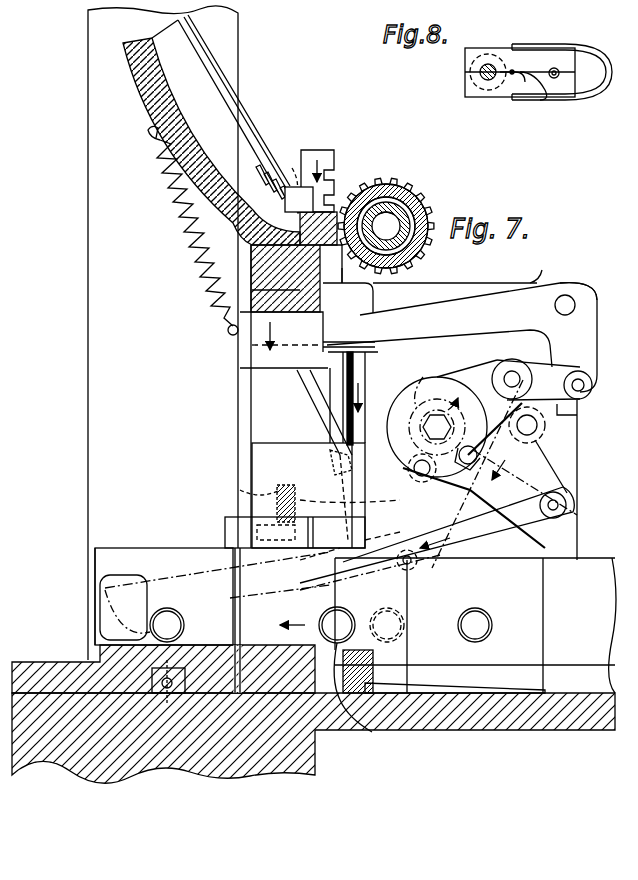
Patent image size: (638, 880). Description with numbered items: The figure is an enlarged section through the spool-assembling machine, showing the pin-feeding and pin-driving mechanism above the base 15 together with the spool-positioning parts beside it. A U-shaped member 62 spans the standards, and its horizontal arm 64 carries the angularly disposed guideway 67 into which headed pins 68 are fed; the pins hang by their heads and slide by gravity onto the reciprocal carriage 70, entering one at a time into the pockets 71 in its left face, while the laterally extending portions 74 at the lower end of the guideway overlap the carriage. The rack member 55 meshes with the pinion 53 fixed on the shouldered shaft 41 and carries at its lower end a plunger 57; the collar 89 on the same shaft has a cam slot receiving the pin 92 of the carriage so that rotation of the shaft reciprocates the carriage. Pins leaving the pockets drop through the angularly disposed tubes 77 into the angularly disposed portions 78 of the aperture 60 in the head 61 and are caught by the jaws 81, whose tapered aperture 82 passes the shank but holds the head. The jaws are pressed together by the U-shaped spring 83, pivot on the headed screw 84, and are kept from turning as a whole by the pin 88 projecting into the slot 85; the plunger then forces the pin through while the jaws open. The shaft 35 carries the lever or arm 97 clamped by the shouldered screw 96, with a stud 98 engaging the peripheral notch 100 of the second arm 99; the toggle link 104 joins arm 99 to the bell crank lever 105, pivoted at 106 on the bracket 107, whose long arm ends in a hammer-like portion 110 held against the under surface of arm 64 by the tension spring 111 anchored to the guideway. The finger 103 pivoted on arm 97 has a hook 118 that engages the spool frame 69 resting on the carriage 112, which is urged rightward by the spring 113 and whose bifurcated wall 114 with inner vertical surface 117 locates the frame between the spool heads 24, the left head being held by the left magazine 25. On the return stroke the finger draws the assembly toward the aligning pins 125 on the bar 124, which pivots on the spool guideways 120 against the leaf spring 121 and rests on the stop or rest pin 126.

In FIG. 7, the left magazine 25 is at (88, 132).
In FIG. 7, the tension spring 111 is at (160, 168).
In FIG. 7, the magazine or guideway 67 is at (242, 130).
In FIG. 7, the headed pins 68 is at (272, 178).
In FIG. 7, the rack member 55 is at (322, 150).
In FIG. 7, the laterally extending portions 74 is at (322, 215).
In FIG. 7, the reciprocal carriage 70 is at (372, 200).
In FIG. 7, the shouldered shaft 41 is at (410, 205).
In FIG. 7, the pinion 53 is at (430, 215).
In FIG. 7, the pockets 71 is at (252, 244).
In FIG. 7, the U-shaped member 62 is at (248, 262).
In FIG. 7, the horizontal arm 64 is at (252, 290).
In FIG. 7, the collar 89 is at (400, 272).
In FIG. 7, the pin 92 is at (428, 279).
In FIG. 7, the hammer-like portion 110 is at (248, 358).
In FIG. 7, the plunger 57 is at (355, 360).
In FIG. 7, the shaft 35 is at (428, 380).
In FIG. 7, the second arm 99 is at (476, 372).
In FIG. 7, the bracket 107 is at (525, 283).
In FIG. 7, the pivot 106 is at (562, 297).
In FIG. 7, the bell crank lever 105 is at (568, 283).
In FIG. 7, the toggle link 104 is at (578, 408).
In FIG. 7, the angularly disposed tubes 77 is at (305, 415).
In FIG. 7, the shouldered screw 96 is at (432, 426).
In FIG. 7, the lever or arm 97 is at (545, 468).
In FIG. 7, the angularly disposed portions 78 is at (332, 460).
In FIG. 7, the headed screw 84 is at (245, 490).
In FIG. 8, the headed screw 84 is at (488, 82).
In FIG. 7, the aperture 82 is at (275, 500).
In FIG. 8, the aperture 82 is at (560, 70).
In FIG. 7, the aperture 60 is at (344, 503).
In FIG. 7, the heads 61 is at (365, 485).
In FIG. 7, the peripheral notch 100 is at (440, 488).
In FIG. 7, the stud 98 is at (478, 470).
In FIG. 7, the jaws 81 is at (365, 538).
In FIG. 8, the jaws 81 is at (535, 55).
In FIG. 7, the U-shaped spring 83 is at (225, 535).
In FIG. 8, the U-shaped spring 83 is at (592, 98).
In FIG. 7, the spool heads 24 is at (150, 548).
In FIG. 7, the bifurcated wall 114 is at (100, 590).
In FIG. 7, the inner vertical surface 117 is at (148, 590).
In FIG. 7, the spool frame 69 is at (180, 612).
In FIG. 7, the carriage 112 is at (125, 607).
In FIG. 7, the spring 113 is at (185, 668).
In FIG. 7, the aligning pins 125 is at (345, 607).
In FIG. 7, the finger 103 is at (440, 572).
In FIG. 7, the bar 124 is at (400, 660).
In FIG. 7, the hook 118 is at (362, 700).
In FIG. 7, the leaf spring 121 is at (400, 700).
In FIG. 7, the stop or rest pin 126 is at (372, 732).
In FIG. 7, the base 15 is at (480, 730).
In FIG. 7, the spool guideways 120 is at (568, 695).
In FIG. 8, the slot 85 is at (512, 70).
In FIG. 8, the pin 88 is at (542, 100).